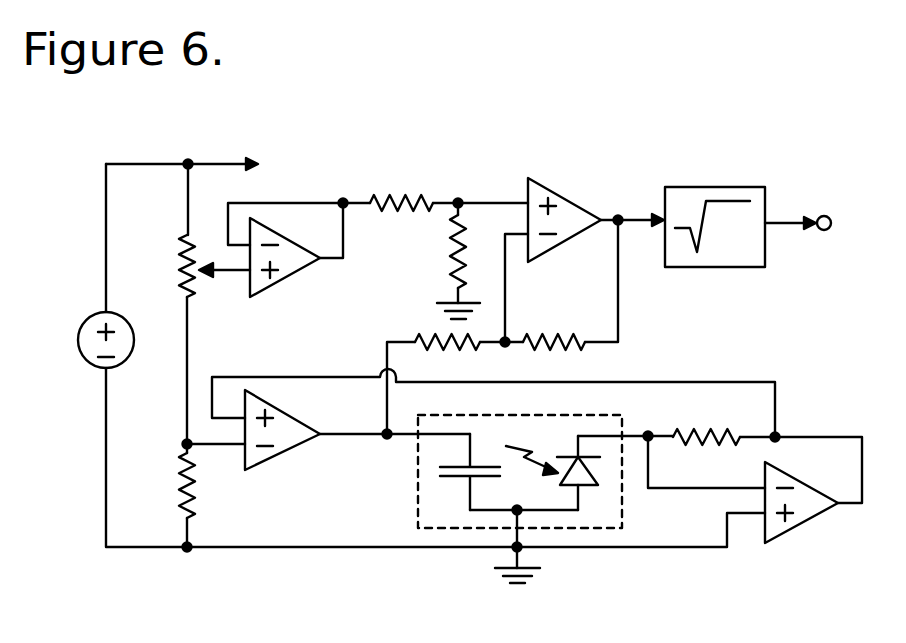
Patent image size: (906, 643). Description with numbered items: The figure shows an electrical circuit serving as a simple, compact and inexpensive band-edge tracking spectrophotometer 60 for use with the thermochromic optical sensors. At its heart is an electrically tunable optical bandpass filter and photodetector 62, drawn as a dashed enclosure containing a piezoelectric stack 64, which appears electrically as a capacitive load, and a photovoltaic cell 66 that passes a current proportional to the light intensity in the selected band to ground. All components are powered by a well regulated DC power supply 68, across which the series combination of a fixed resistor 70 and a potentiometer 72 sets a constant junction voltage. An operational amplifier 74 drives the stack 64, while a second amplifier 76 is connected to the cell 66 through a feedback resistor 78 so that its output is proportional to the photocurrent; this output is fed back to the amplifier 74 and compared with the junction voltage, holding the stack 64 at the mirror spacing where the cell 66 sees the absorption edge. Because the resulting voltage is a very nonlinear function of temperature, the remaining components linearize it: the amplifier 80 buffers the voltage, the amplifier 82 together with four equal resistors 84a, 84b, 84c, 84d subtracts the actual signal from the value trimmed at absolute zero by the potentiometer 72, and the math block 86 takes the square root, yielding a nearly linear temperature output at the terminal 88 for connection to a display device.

The band-edge tracking spectrophotometer 60 is at (670, 155).
The electrically tunable optical bandpass filter and photodetector 62 is at (483, 528).
The piezoelectric stack 64 is at (448, 477).
The photovoltaic cell 66 is at (588, 485).
The DC power supply 68 is at (88, 366).
The fixed resistor 70 is at (176, 487).
The potentiometer 72 is at (178, 265).
The operational amplifier 74 is at (257, 470).
The second amplifier 76 is at (800, 527).
The feedback resistor 78 is at (728, 438).
The amplifier 80 is at (255, 232).
The amplifier 82 is at (568, 193).
The resistor 84a is at (407, 192).
The resistor 84b is at (465, 230).
The resistor 84c is at (467, 340).
The resistor 84d is at (585, 350).
The math block 86 is at (760, 185).
The terminal 88 is at (832, 232).